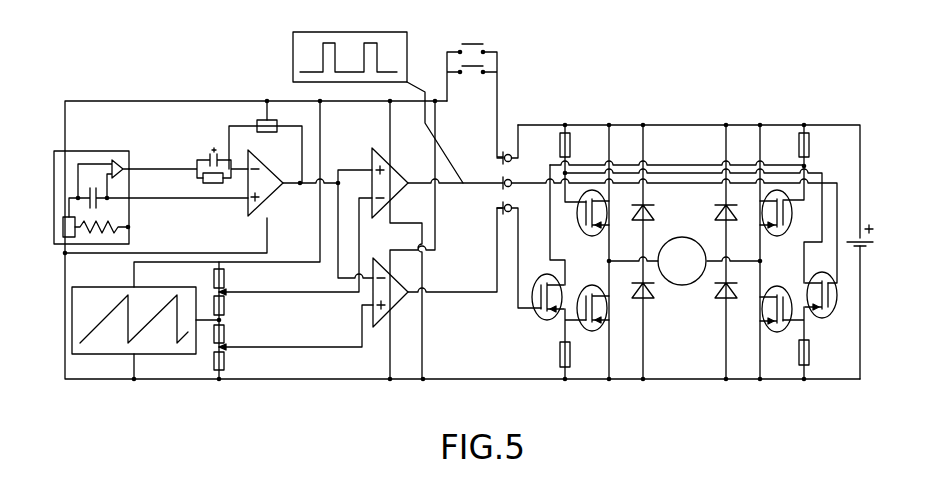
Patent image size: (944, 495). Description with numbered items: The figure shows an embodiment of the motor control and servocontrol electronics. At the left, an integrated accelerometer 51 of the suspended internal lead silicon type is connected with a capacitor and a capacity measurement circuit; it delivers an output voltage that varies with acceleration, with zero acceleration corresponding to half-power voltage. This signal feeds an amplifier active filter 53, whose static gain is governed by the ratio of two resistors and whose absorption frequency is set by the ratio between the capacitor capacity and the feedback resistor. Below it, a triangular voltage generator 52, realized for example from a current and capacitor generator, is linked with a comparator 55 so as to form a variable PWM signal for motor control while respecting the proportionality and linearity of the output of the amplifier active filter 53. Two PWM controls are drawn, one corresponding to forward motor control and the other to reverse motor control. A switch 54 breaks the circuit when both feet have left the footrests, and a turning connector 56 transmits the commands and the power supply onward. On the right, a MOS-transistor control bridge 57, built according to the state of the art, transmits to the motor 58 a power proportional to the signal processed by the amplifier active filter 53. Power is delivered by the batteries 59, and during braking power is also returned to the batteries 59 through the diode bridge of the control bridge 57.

The integrated accelerometer 51 is at (89, 151).
The triangular voltage generator 52 is at (157, 355).
The amplifier active filter 53 is at (274, 175).
The switch 54 is at (498, 72).
The comparator 55 is at (372, 178).
The turning connector 56 is at (507, 152).
The MOS-transistor control bridge 57 is at (606, 213).
The motor 58 is at (683, 236).
The batteries 59 is at (856, 238).